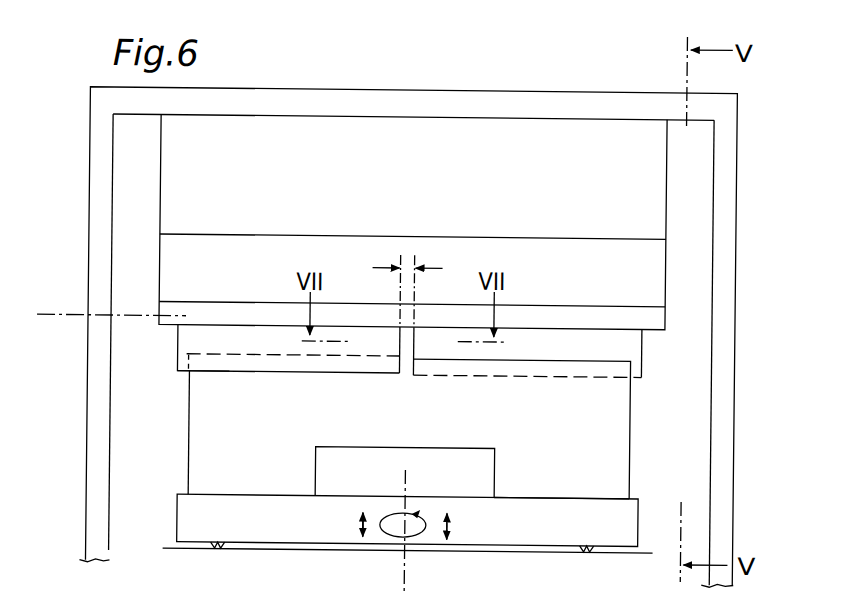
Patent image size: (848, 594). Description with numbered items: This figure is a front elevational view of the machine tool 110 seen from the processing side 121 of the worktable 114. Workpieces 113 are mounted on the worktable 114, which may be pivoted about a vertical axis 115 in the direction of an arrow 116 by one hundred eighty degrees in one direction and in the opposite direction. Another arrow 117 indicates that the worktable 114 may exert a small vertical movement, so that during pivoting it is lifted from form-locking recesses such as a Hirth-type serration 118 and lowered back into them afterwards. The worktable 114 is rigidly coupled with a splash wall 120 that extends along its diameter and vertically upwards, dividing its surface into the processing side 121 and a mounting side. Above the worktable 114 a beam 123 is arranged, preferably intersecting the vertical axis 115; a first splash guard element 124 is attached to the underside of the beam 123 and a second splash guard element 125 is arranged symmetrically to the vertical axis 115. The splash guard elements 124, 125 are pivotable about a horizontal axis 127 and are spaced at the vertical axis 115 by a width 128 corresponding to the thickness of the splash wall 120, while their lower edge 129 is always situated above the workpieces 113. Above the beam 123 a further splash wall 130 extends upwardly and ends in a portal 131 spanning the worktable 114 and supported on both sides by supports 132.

The machine tool 110 is at (76, 100).
The portal 131 is at (505, 97).
The supports 132 is at (103, 215).
The further splash wall 130 is at (170, 185).
The beam 123 is at (601, 318).
The horizontal axis 127 is at (60, 320).
The width 128 is at (408, 262).
The second splash guard element 125 is at (192, 344).
The first splash guard element 124 is at (631, 349).
The lower edge 129 is at (207, 378).
The splash wall 120 is at (620, 421).
The workpieces 113 is at (355, 460).
The worktable 114 is at (178, 504).
The processing side 121 is at (533, 495).
The Hirth-type serration 118 is at (220, 551).
The vertical axis 115 is at (407, 571).
The arrow 116 is at (418, 533).
The arrow 117 is at (452, 525).